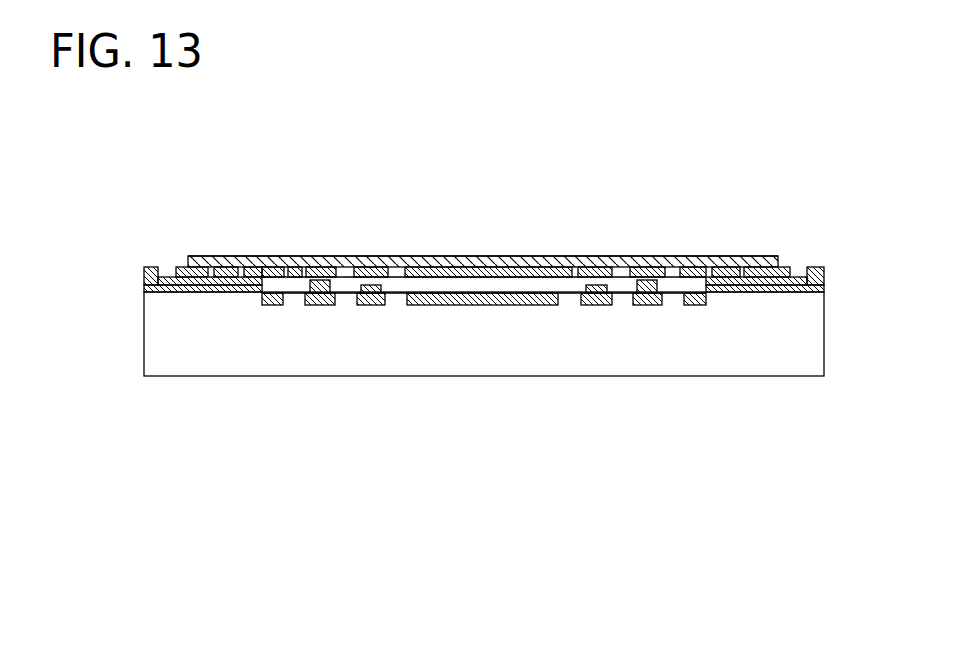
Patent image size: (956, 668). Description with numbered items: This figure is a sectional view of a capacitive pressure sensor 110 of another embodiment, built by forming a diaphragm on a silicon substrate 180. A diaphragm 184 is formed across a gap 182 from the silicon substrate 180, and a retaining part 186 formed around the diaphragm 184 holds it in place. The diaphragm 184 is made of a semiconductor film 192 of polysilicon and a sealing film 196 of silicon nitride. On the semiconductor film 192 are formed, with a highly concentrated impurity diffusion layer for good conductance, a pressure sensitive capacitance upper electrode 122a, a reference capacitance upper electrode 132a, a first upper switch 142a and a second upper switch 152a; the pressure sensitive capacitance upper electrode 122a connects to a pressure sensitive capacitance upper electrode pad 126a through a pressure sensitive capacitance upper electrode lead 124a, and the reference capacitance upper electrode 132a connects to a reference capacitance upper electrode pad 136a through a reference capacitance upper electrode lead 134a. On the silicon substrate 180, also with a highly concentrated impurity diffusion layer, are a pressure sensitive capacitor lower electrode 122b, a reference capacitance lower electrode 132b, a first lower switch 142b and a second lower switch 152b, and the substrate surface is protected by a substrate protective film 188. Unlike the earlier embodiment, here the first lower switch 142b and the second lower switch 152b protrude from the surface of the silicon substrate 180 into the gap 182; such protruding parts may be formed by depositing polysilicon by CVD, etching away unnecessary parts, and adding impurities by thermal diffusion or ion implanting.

The capacitive pressure sensor 110 is at (126, 292).
The silicon substrate 180 is at (812, 318).
The substrate protective film 188 is at (813, 288).
The reference capacitance upper electrode pad 136a is at (172, 273).
The pressure sensitive capacitance upper electrode pad 126a is at (798, 272).
The reference capacitance upper electrode lead 134a is at (268, 275).
The sealing film 196 is at (205, 268).
The retaining part 186 is at (226, 250).
The reference capacitance upper electrode 132a is at (279, 266).
The semiconductor film 192 is at (296, 268).
The first upper switch 142a is at (322, 268).
The second upper switch 152a is at (372, 268).
The pressure sensitive capacitance upper electrode 122a is at (535, 268).
The pressure sensitive capacitance upper electrode lead 124a is at (740, 276).
The diaphragm 184 is at (417, 240).
The gap 182 is at (492, 285).
The reference capacitance lower electrode 132b is at (273, 307).
The first lower switch 142b is at (320, 307).
The second lower switch 152b is at (372, 307).
The pressure sensitive capacitor lower electrode 122b is at (483, 307).